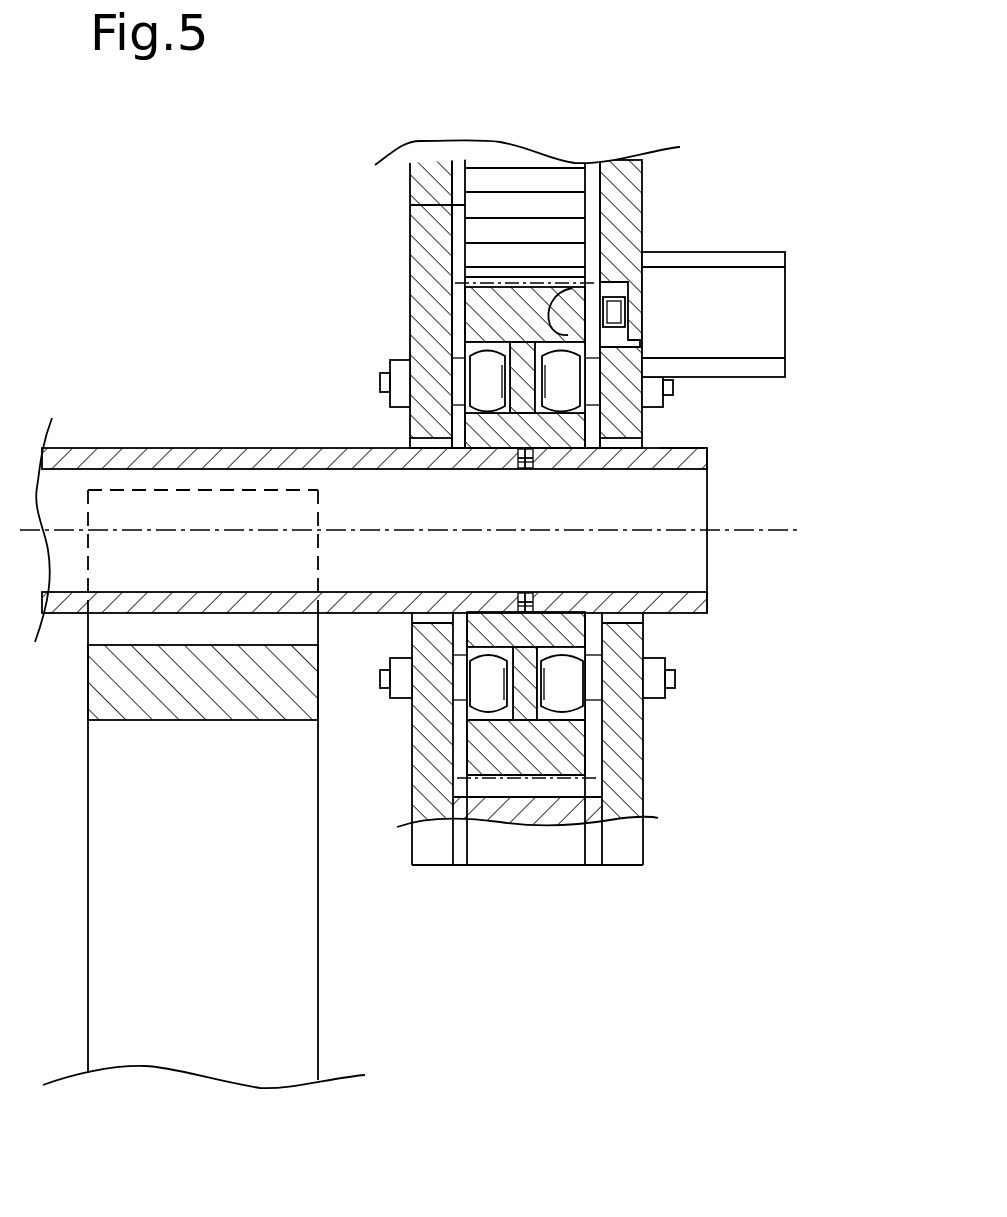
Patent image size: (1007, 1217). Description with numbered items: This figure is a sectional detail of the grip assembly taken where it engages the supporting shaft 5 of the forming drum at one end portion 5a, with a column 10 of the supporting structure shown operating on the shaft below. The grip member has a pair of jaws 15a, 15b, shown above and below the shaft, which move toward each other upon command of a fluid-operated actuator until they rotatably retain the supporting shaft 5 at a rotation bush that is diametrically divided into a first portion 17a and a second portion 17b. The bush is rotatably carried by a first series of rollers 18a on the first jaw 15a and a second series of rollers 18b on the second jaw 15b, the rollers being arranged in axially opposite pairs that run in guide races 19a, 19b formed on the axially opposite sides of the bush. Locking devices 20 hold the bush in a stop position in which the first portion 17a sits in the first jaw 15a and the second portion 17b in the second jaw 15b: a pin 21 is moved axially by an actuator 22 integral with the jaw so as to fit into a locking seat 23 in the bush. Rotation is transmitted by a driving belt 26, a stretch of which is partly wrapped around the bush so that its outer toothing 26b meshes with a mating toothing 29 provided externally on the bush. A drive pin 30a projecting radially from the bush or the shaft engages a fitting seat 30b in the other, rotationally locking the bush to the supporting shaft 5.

The supporting shaft 5 is at (50, 493).
The end portion of the supporting shaft 5a is at (700, 460).
The column 10 is at (210, 960).
The first jaw 15a is at (410, 427).
The second jaw 15b is at (643, 833).
The first portion of the rotation bush 17a is at (493, 310).
The second portion of the rotation bush 17b is at (567, 767).
The first series of rollers 18a is at (485, 370).
The second series of rollers 18b is at (486, 683).
The guide race 19a is at (550, 757).
The guide race 19b is at (463, 717).
The locking devices 20 is at (511, 254).
The pin 21 is at (612, 292).
The actuator 22 is at (740, 307).
The locking seat 23 is at (568, 290).
The driving belt 26 is at (457, 210).
The outer toothing 26b is at (513, 187).
The mating toothing 29 is at (487, 280).
The drive pin 30a is at (522, 467).
The fitting seat 30b is at (530, 468).